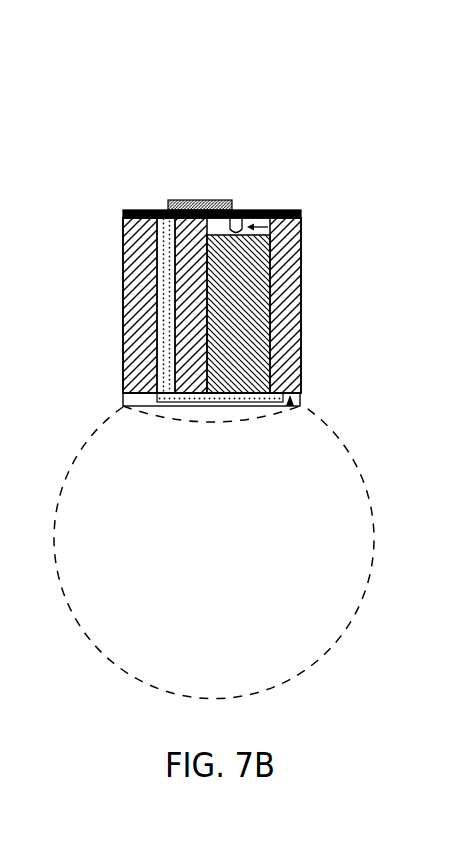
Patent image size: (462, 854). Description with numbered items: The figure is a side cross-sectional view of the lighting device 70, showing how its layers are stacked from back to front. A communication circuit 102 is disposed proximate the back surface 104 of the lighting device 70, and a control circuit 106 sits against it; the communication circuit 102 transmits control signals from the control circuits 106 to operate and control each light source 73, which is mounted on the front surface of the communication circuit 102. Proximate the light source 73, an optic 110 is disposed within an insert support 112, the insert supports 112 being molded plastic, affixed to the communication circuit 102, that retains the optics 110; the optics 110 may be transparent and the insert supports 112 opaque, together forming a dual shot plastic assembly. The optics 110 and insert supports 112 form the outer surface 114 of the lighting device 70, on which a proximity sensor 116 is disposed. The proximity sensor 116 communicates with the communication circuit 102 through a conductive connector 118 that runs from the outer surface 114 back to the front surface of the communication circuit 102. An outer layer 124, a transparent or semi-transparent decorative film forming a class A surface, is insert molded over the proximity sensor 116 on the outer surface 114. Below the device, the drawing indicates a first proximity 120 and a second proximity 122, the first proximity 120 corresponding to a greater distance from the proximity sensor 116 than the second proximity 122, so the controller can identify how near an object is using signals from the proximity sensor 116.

The lighting device 70 is at (255, 103).
The communication circuit 102 is at (138, 210).
The back surface 104 is at (286, 210).
The control circuit 106 is at (208, 200).
The light source 73 is at (301, 237).
The conductive connector 118 is at (163, 258).
The insert support 112 is at (140, 327).
The optic 110 is at (253, 305).
The outer layer 124 is at (140, 404).
The proximity sensor 116 is at (194, 396).
The second proximity 122 is at (216, 421).
The outer surface 114 is at (291, 407).
The first proximity 120 is at (86, 628).